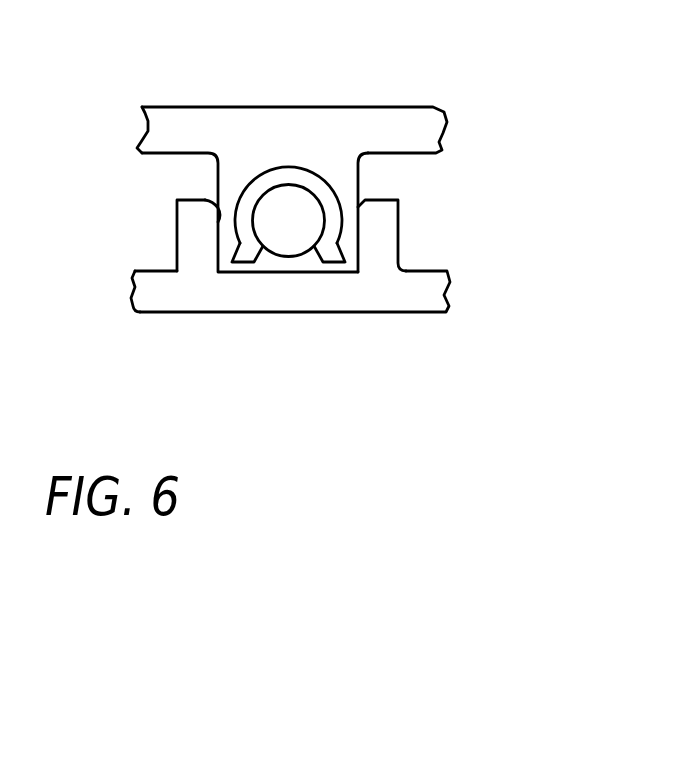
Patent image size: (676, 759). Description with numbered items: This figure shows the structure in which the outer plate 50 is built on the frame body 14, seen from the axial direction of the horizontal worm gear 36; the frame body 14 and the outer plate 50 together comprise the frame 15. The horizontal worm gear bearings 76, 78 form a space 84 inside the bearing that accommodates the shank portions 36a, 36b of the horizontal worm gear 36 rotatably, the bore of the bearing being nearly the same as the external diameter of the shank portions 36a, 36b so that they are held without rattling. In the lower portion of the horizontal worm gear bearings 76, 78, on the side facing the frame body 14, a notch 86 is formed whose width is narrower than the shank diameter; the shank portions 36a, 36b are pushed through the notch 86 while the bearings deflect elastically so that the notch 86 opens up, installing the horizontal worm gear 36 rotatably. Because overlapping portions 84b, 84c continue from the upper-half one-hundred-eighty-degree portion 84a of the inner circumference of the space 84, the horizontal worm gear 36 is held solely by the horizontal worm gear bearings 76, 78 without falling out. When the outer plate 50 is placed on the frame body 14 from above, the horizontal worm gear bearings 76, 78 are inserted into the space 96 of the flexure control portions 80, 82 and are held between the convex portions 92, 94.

The frame body 14 is at (432, 293).
The frame 15 is at (163, 133).
The horizontal worm gear 36 is at (260, 204).
The shank portion 36a is at (260, 204).
The shank portion 36b is at (287, 230).
The outer plate 50 is at (418, 132).
The horizontal worm gear bearing 76 is at (451, 212).
The horizontal worm gear bearing 78 is at (378, 178).
The flexure control portion 80 is at (456, 305).
The flexure control portion 82 is at (375, 240).
The space inside the bearing 84 is at (307, 221).
The upper-half 180-degree portion 84a is at (286, 168).
The overlapping portion 84b is at (238, 250).
The overlapping portion 84c is at (342, 258).
The notch 86 is at (264, 259).
The convex portion 92 is at (193, 250).
The convex portion 94 is at (456, 305).
The space 96 is at (217, 196).